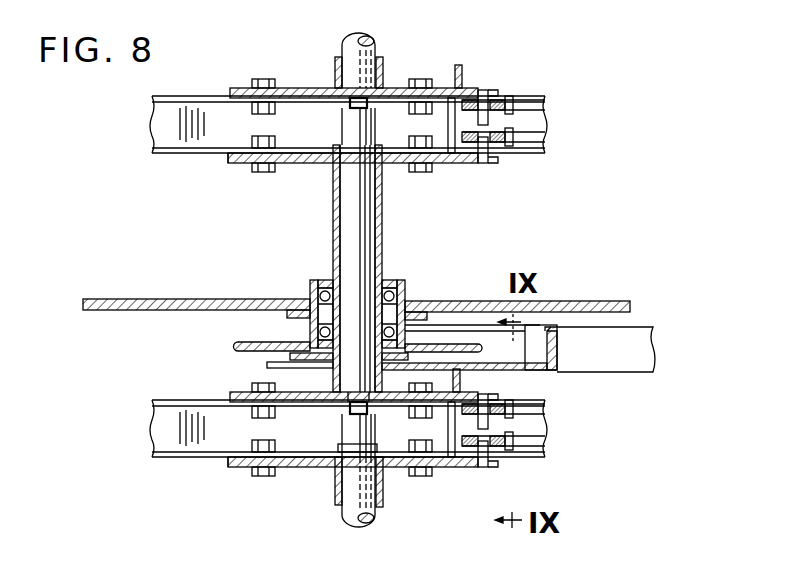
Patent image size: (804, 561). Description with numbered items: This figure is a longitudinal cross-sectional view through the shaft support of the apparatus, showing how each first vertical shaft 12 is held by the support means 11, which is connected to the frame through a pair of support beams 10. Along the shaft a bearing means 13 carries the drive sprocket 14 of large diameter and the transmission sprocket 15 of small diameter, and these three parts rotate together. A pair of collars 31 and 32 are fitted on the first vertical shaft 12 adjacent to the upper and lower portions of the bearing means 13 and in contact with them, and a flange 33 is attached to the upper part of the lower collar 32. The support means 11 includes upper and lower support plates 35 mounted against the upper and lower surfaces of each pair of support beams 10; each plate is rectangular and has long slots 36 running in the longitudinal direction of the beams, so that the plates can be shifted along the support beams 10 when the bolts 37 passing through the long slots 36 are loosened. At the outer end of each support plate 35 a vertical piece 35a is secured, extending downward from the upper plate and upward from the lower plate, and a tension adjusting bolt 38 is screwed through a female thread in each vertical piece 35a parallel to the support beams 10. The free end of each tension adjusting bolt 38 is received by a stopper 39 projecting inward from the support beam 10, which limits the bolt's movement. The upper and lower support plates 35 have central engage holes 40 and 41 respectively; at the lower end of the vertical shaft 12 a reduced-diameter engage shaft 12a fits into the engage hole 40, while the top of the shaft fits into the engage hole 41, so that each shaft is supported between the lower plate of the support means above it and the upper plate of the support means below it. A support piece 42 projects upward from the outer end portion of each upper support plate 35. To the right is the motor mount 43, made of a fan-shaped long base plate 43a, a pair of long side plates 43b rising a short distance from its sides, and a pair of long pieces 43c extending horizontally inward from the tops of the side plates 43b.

The support beams 10 is at (152, 125).
The support means 11 is at (222, 172).
The first vertical shaft 12 is at (344, 44).
The engage shaft 12a is at (356, 415).
The bearing means 13 is at (313, 284).
The drive sprocket 14 is at (616, 300).
The transmission sprocket 15 is at (474, 344).
The collar 31 is at (383, 234).
The collar 32 is at (334, 74).
The flange 33 is at (290, 362).
The support plates 35 is at (480, 90).
The vertical pieces 35a is at (489, 96).
The long slots 36 is at (238, 88).
The bolts 37 is at (264, 79).
The tension adjusting bolt 38 is at (525, 105).
The stopper 39 is at (448, 125).
The engage hole 40 is at (358, 392).
The engage hole 41 is at (340, 446).
The support piece 42 is at (460, 66).
The motor mount 43 is at (653, 372).
The base plate 43a is at (544, 372).
The side plates 43b is at (610, 366).
The long pieces 43c is at (548, 326).